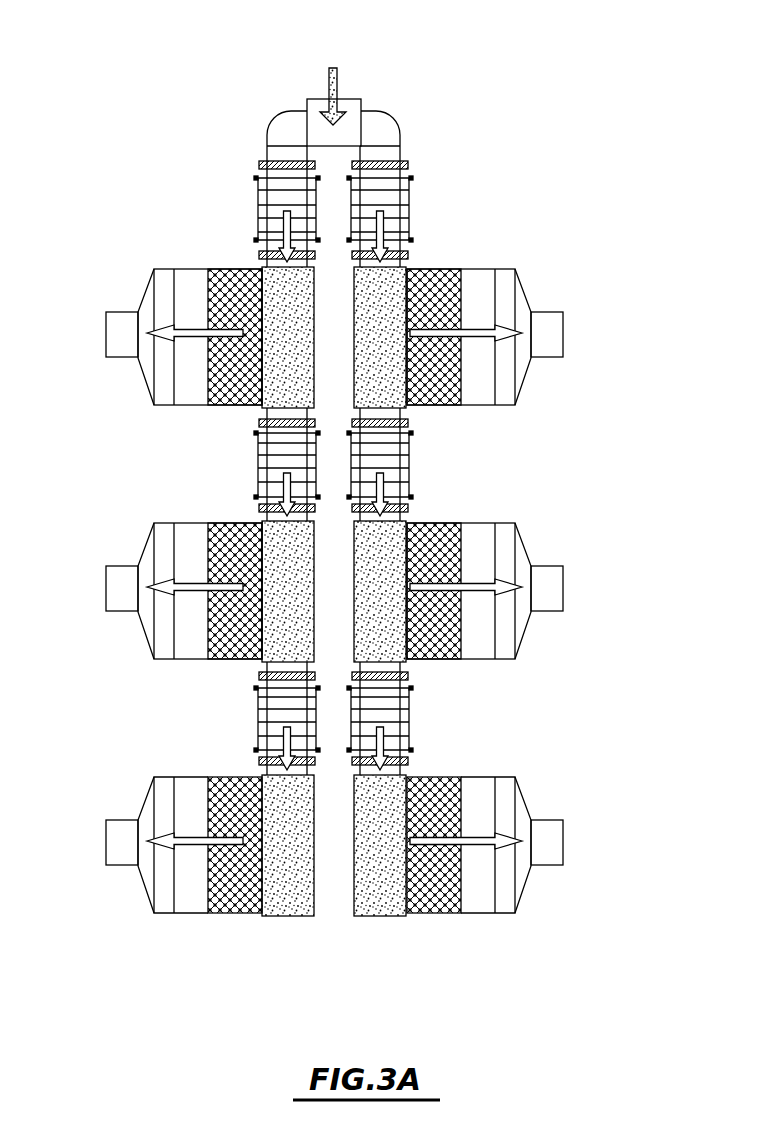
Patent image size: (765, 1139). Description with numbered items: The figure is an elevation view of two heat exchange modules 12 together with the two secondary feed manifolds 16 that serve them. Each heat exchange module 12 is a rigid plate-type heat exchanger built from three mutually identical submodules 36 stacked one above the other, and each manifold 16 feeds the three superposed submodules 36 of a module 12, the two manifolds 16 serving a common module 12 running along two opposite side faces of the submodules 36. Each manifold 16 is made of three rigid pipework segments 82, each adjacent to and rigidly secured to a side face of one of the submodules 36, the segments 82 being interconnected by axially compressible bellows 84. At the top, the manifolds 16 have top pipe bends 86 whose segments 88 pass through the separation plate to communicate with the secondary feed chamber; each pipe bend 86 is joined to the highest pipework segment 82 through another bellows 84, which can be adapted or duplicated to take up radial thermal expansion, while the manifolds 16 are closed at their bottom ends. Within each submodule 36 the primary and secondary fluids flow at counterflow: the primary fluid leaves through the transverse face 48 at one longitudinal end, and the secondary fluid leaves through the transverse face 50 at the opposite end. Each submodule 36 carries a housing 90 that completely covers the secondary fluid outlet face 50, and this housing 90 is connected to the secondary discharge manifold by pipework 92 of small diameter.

The heat exchange module 12 is at (202, 926).
The secondary feed manifold 16 is at (190, 210).
The submodule 36 is at (216, 770).
The transverse face 48 is at (307, 858).
The transverse face 50 is at (177, 888).
The rigid pipework segment 82 is at (380, 298).
The axially compressible bellows 84 is at (388, 195).
The top pipe bend 86 is at (277, 126).
The segment 88 is at (352, 108).
The housing 90 is at (479, 903).
The pipework 92 is at (552, 847).